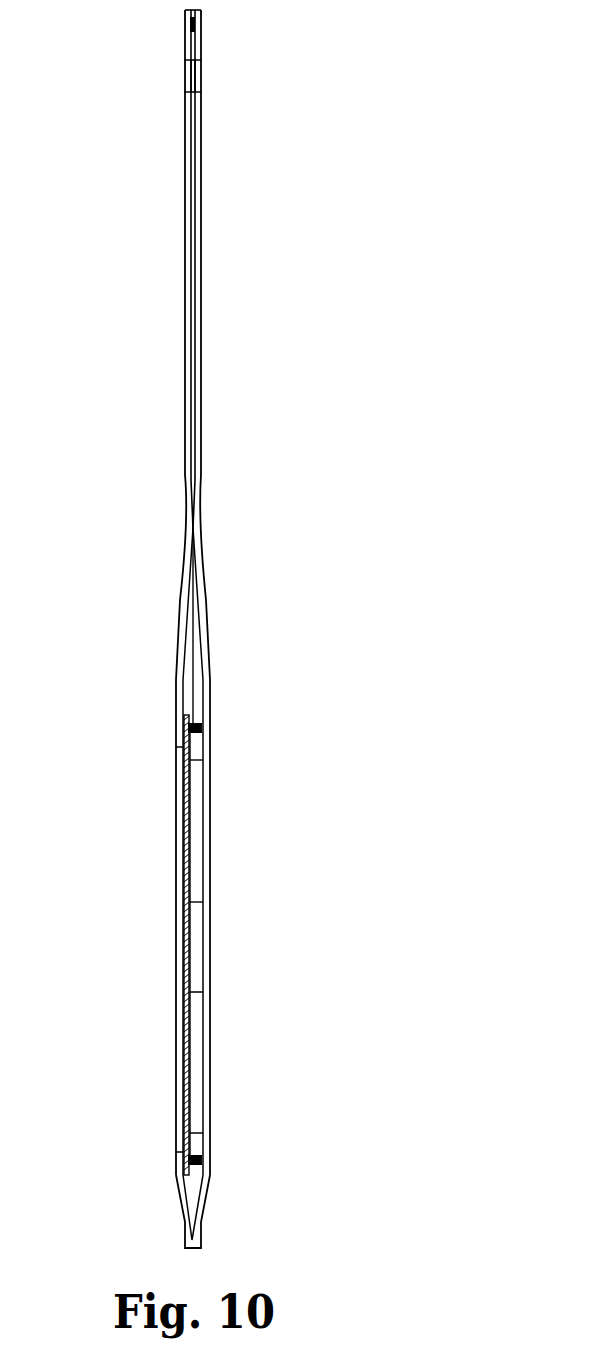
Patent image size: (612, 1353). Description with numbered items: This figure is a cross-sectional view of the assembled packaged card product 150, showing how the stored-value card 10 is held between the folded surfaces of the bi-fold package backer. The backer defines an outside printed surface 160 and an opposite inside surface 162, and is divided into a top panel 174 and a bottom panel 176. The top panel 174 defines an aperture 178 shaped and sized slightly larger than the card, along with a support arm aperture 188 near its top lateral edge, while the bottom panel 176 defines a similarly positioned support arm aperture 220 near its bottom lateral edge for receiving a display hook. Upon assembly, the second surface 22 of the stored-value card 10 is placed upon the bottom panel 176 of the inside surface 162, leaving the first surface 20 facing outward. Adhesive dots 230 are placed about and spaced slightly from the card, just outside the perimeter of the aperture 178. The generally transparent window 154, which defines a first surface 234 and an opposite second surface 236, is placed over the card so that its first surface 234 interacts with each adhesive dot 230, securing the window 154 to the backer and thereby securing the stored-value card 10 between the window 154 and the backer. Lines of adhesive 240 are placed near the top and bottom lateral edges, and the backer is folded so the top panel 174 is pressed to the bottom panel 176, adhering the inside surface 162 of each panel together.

The packaged card product 150 is at (328, 157).
The printed surface 160 is at (185, 427).
The inside surface 162 is at (196, 385).
The support arm aperture 188 is at (184, 71).
The support arm aperture 220 is at (197, 75).
The lines of adhesive 240 is at (196, 23).
The top panel 174 is at (181, 607).
The bottom panel 176 is at (209, 657).
The adhesive dots 230 is at (203, 728).
The window 154 is at (183, 800).
The second surface 236 is at (183, 833).
The stored-value card 10 is at (197, 855).
The first surface 234 is at (190, 823).
The second surface 22 is at (204, 897).
The first surface 20 is at (183, 888).
The aperture 178 is at (176, 1055).